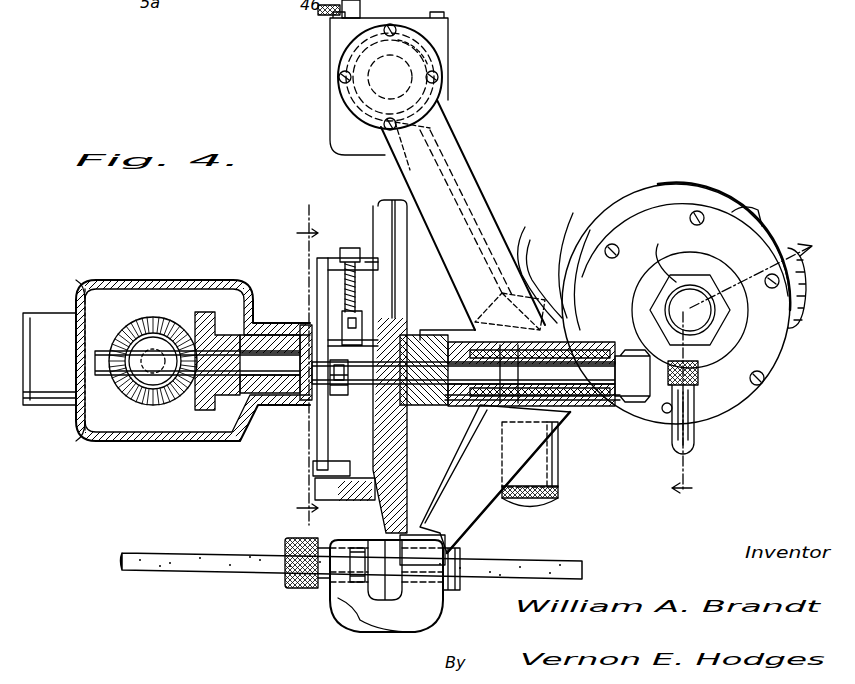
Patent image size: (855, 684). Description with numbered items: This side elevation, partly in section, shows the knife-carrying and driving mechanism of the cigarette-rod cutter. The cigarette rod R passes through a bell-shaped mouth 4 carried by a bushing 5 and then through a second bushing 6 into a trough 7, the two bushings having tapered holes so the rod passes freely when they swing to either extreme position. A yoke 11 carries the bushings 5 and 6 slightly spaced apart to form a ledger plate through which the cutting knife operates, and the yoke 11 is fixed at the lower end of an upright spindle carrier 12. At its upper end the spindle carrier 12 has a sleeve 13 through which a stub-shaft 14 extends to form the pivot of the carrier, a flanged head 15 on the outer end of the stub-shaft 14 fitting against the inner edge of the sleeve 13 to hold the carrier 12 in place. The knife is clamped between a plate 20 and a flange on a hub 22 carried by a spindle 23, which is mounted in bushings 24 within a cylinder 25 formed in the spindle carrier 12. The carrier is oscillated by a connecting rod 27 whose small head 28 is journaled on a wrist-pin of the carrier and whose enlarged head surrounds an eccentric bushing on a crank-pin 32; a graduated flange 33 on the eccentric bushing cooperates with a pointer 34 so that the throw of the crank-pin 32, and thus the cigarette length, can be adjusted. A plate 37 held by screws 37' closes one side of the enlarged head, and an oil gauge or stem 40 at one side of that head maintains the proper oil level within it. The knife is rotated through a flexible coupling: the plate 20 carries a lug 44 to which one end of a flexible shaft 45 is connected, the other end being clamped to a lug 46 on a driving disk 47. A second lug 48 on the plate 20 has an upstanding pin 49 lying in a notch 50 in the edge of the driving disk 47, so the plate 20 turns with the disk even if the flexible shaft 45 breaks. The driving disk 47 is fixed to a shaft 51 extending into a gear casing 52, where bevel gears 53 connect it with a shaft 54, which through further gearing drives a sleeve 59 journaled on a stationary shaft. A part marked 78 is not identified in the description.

The bell-shaped mouth 4 is at (284, 572).
The bushing 5 is at (318, 584).
The second bushing 6 is at (445, 557).
The trough 7 is at (307, 366).
The yoke 11 is at (383, 628).
The spindle carrier 12 is at (458, 172).
The sleeve 13 is at (452, 82).
The stub-shaft 14 is at (455, 63).
The flanged head 15 is at (432, 45).
The plate 20 is at (384, 210).
The hub 22 is at (432, 345).
The spindle 23 is at (566, 420).
The bushings 24 is at (458, 408).
The cylinder 25 is at (585, 330).
The connecting rod 27 is at (398, 290).
The small head 28 is at (534, 266).
The crank-pin 32 is at (702, 320).
The graduated flange 33 is at (760, 224).
The pointer 34 is at (792, 242).
The plate 37 is at (695, 303).
The screws 37' is at (716, 276).
The oil gauge or stem 40 is at (700, 433).
The lug 44 is at (370, 264).
The flexible shaft 45 is at (350, 266).
The lug 46 is at (356, 318).
The driving disk 47 is at (312, 430).
The second lug 48 is at (320, 494).
The upstanding pin 49 is at (390, 478).
The notch 50 is at (330, 441).
The shaft 51 is at (248, 428).
The gear casing 52 is at (115, 441).
The bevel gears 53 is at (185, 441).
The shaft 54 is at (150, 300).
The sleeve 59 is at (660, 252).
The clamp jaw 78 is at (445, 545).
The cigarette rod R is at (203, 555).